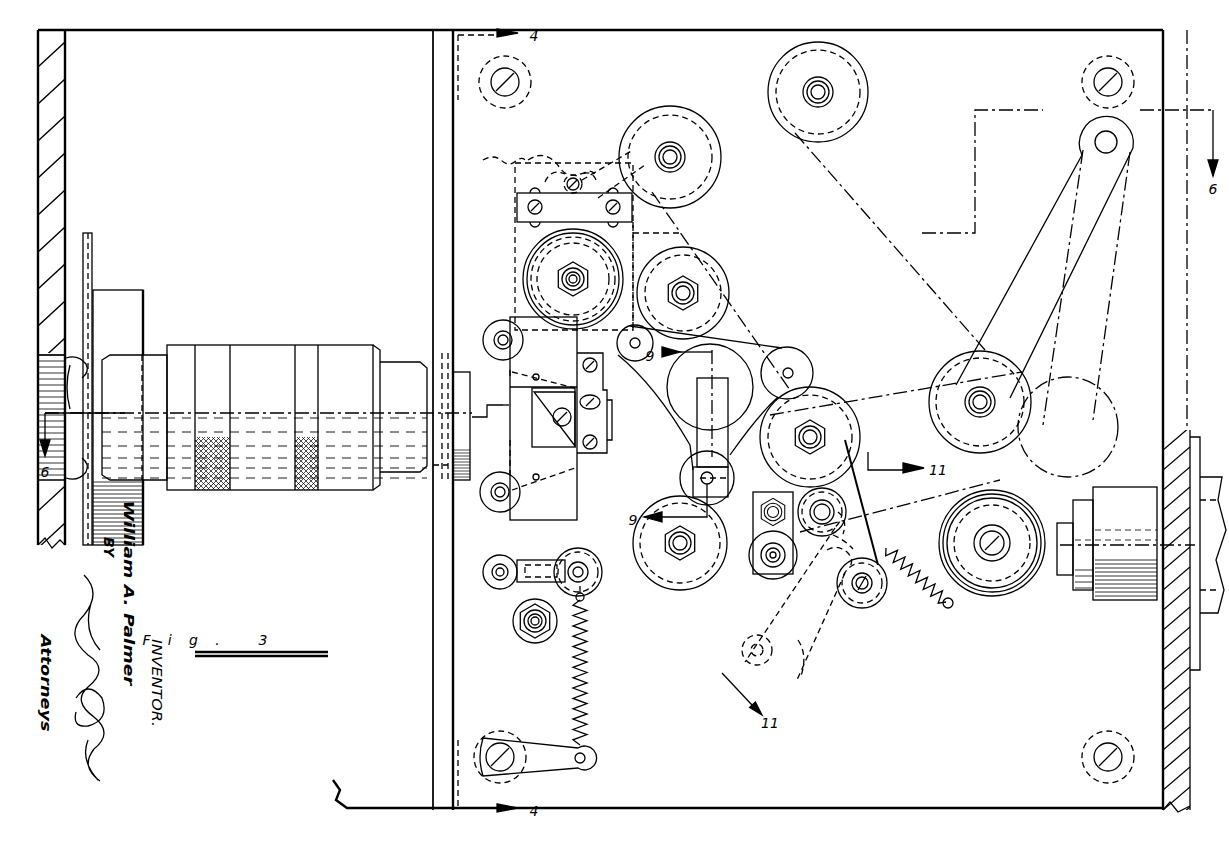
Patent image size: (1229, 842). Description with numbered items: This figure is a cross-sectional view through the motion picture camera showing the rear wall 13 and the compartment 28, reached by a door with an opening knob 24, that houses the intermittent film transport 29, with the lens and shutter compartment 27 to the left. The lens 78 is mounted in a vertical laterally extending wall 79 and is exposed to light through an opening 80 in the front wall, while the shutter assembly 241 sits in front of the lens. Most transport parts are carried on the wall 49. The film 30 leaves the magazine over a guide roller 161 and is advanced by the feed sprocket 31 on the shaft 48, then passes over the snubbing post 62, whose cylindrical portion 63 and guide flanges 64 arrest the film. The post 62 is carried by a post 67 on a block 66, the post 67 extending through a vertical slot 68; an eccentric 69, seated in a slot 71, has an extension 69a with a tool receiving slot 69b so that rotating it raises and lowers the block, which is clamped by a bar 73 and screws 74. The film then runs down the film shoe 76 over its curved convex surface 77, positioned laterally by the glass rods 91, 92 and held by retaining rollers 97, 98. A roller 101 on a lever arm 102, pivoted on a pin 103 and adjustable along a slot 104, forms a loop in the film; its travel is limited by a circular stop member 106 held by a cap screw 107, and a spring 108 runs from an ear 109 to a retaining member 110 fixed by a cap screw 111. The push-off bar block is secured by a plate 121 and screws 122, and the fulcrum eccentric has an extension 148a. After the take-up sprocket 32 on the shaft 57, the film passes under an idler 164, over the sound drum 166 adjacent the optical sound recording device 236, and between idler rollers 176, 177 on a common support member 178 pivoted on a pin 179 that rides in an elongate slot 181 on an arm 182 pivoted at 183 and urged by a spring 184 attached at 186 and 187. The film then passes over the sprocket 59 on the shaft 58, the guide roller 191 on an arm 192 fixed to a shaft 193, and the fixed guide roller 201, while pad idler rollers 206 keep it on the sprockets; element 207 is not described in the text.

The rear wall 13 is at (1163, 695).
The opening knob 24 is at (143, 292).
The lens and shutter compartment 27 is at (228, 163).
The compartment 28 is at (452, 660).
The intermittent film transport 29 is at (883, 647).
The film 30 is at (884, 222).
The feed sprocket 31 is at (730, 302).
The take-up sprocket 32 is at (687, 591).
The shaft 48 is at (705, 285).
The wall 49 is at (981, 729).
The shaft 57 is at (660, 577).
The shaft 58 is at (822, 428).
The sprocket 59 is at (862, 438).
The snubbing post 62 is at (508, 252).
The cylindrical portion 63 is at (530, 303).
The guide flanges 64 is at (527, 282).
The block 66 is at (501, 151).
The post 67 is at (571, 292).
The vertical slot 68 is at (584, 296).
The eccentric 69 is at (538, 153).
The extension 69a is at (569, 179).
The tool receiving slot 69b is at (578, 179).
The slot 71 is at (628, 156).
The bar 73 is at (634, 220).
The screws 74 is at (517, 207).
The film shoe 76 is at (570, 500).
The curved convex surface 77 is at (513, 445).
The lens 78 is at (274, 341).
The vertical laterally extending wall 79 is at (433, 712).
The opening 80 is at (76, 360).
The glass rod 91 is at (516, 373).
The glass rod 92 is at (516, 470).
The retaining roller 97 is at (492, 352).
The retaining roller 98 is at (495, 510).
The roller 101 is at (583, 553).
The lever arm 102 is at (520, 619).
The pin 103 is at (494, 585).
The slot 104 is at (530, 560).
The circular stop member 106 is at (549, 641).
The cap screw 107 is at (526, 632).
The spring 108 is at (588, 680).
The ear 109 is at (585, 600).
The retaining member 110 is at (546, 750).
The cap screw 111 is at (500, 746).
The plate 121 is at (600, 441).
The screws 122 is at (602, 454).
The extension 148a is at (605, 405).
The guide roller 161 is at (720, 170).
The idler 164 is at (776, 580).
The sound drum 166 is at (1022, 585).
The idler roller 176 is at (860, 608).
The idler roller 177 is at (838, 502).
The common support member 178 is at (888, 551).
The pin 179 is at (840, 570).
The elongate slot 181 is at (820, 612).
The arm 182 is at (804, 676).
The pivot point 183 is at (750, 652).
The spring 184 is at (867, 586).
The attachment point 186 is at (856, 520).
The attachment point 187 is at (948, 610).
The guide roller 191 is at (960, 362).
The arm 192 is at (1022, 270).
The shaft 193 is at (1095, 142).
The fixed guide roller 201 is at (864, 93).
The rollers 206 is at (797, 369).
The lever 207 is at (768, 351).
The optical sound recording device 236 is at (1197, 553).
The shutter assembly 241 is at (108, 257).